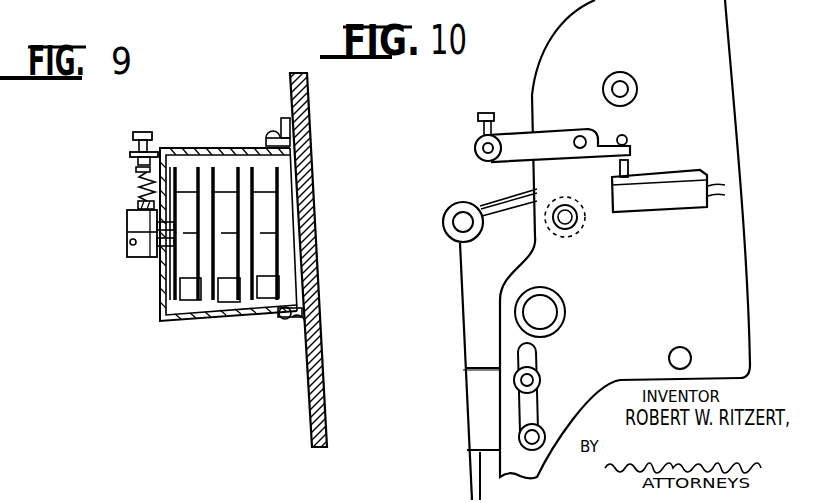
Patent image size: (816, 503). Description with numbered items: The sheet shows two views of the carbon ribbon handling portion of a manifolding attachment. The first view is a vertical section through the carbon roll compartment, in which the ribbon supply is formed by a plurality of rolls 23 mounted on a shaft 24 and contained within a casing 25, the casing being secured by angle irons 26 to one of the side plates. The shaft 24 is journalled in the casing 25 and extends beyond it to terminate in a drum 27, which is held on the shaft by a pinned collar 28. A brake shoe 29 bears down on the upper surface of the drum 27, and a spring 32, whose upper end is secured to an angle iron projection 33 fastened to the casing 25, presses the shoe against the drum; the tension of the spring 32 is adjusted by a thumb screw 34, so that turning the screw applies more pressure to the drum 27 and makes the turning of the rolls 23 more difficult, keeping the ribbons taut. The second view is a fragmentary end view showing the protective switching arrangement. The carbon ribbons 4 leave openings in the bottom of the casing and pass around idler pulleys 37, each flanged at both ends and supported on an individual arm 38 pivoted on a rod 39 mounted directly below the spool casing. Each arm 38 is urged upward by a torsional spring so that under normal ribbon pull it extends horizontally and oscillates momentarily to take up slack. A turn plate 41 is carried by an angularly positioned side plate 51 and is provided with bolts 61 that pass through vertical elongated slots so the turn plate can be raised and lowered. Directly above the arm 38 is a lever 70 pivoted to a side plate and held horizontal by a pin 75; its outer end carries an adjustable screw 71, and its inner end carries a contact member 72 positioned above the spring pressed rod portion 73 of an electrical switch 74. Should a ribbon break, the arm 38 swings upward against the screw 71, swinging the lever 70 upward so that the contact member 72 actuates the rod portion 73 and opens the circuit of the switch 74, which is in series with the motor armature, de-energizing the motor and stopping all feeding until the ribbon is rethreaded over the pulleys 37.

In FIG. 10, the ribbons 4 is at (460, 322).
In FIG. 9, the rolls 23 is at (190, 195).
In FIG. 9, the shaft 24 is at (157, 247).
In FIG. 9, the casing 25 is at (170, 320).
In FIG. 9, the angle irons 26 is at (276, 130).
In FIG. 9, the drum 27 is at (127, 227).
In FIG. 9, the pinned collar 28 is at (127, 253).
In FIG. 9, the brake shoe 29 is at (138, 205).
In FIG. 9, the spring 32 is at (140, 183).
In FIG. 9, the angle iron projection 33 is at (130, 157).
In FIG. 9, the thumb screw 34 is at (144, 132).
In FIG. 10, the idler pulleys 37 is at (445, 225).
In FIG. 10, the arms 38 is at (537, 235).
In FIG. 10, the rod 39 is at (565, 224).
In FIG. 10, the turn plate 41 is at (473, 476).
In FIG. 10, the side plate 51 is at (490, 398).
In FIG. 10, the bolts 61 is at (540, 373).
In FIG. 10, the lever 70 is at (553, 130).
In FIG. 10, the screw 71 is at (490, 118).
In FIG. 10, the contact member 72 is at (631, 148).
In FIG. 10, the spring pressed rod portion 73 is at (620, 166).
In FIG. 10, the electrical switch 74 is at (642, 208).
In FIG. 10, the pin 75 is at (626, 135).